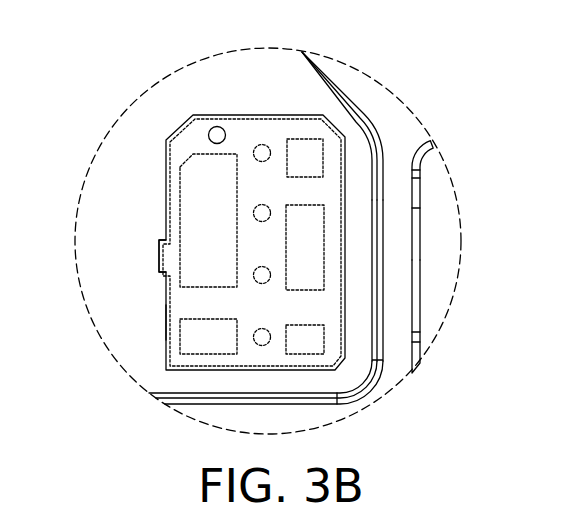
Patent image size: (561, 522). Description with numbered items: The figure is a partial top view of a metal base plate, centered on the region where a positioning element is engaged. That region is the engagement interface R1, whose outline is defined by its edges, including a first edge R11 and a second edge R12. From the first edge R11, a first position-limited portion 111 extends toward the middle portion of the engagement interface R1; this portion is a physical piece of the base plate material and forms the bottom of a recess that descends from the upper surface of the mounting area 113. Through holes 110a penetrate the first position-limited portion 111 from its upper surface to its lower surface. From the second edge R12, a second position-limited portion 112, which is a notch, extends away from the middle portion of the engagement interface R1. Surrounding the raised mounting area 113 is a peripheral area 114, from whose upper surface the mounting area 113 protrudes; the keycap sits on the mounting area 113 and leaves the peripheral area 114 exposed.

The through hole 110a is at (265, 150).
The first position-limited portion 111 is at (330, 238).
The second position-limited portion 112 is at (173, 258).
The mounting area 113 is at (382, 198).
The peripheral area 114 is at (396, 289).
The engagement interface R1 is at (348, 168).
The first edge R11 is at (343, 303).
The second edge R12 is at (167, 323).